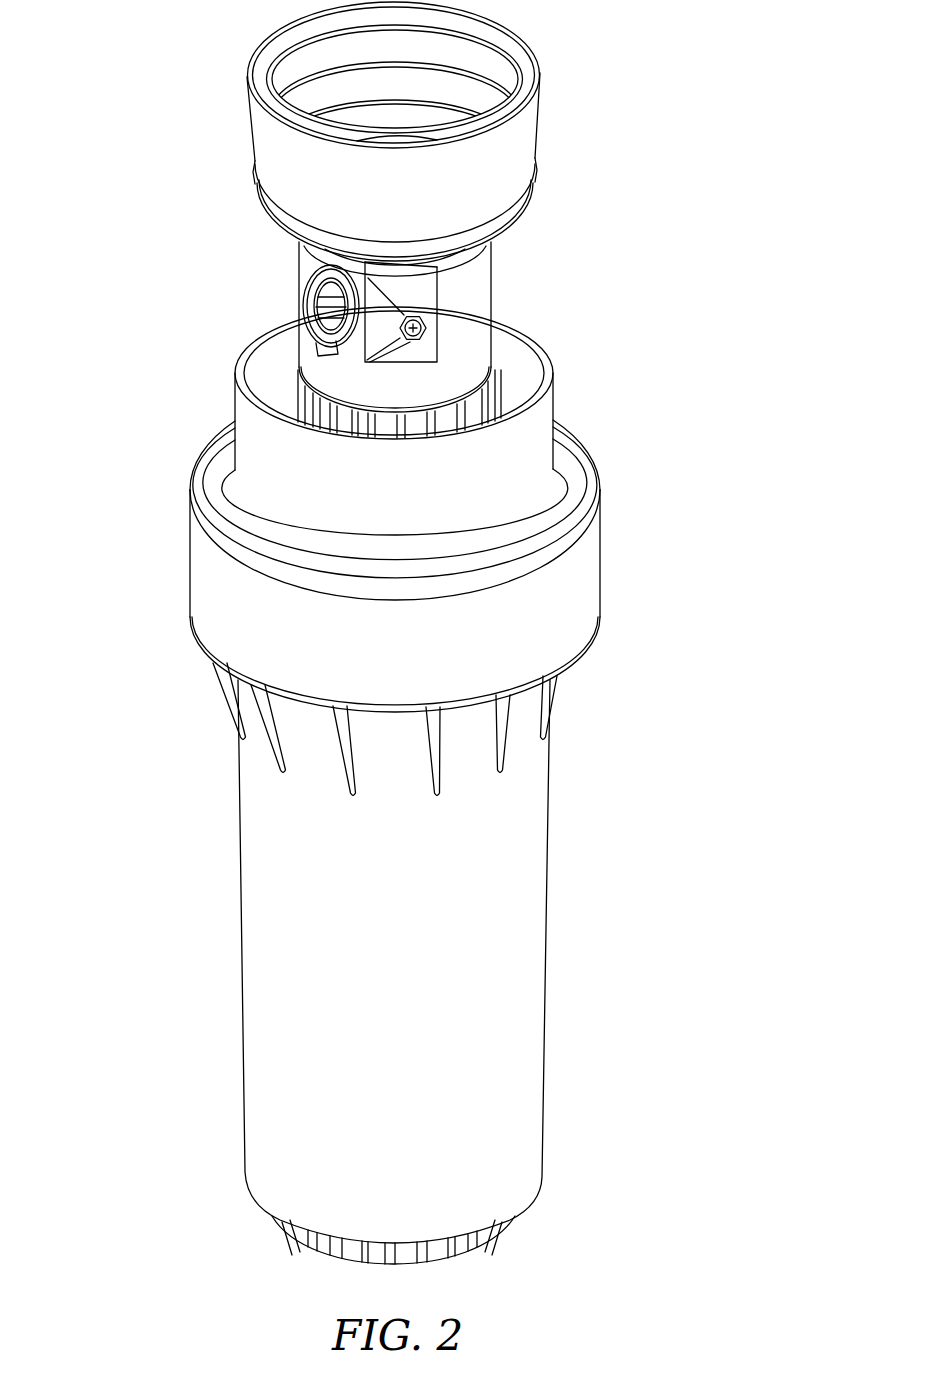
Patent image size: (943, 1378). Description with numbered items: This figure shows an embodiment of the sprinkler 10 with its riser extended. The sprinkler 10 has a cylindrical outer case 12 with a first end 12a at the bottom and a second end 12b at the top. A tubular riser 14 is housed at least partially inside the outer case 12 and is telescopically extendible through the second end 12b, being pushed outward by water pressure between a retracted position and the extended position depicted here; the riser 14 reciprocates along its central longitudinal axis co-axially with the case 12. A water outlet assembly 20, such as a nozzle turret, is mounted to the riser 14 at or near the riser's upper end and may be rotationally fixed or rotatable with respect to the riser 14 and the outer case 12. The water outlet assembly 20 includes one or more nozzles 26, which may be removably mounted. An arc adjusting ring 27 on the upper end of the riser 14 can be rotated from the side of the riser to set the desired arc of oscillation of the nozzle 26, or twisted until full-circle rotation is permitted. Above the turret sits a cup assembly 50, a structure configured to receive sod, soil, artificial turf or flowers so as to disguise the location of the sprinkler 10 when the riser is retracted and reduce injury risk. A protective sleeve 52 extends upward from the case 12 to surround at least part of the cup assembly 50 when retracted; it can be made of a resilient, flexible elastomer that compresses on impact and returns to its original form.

The sprinkler 10 is at (711, 79).
The cup assembly 50 is at (212, 165).
The water outlet assembly 20 is at (507, 269).
The nozzle 26 is at (305, 303).
The riser 14 is at (508, 378).
The sleeve 52 is at (540, 415).
The arc adjusting ring 27 is at (300, 405).
The outer case 12 is at (544, 890).
The first end of the outer case 12a is at (171, 1129).
The second end of the outer case 12b is at (129, 666).